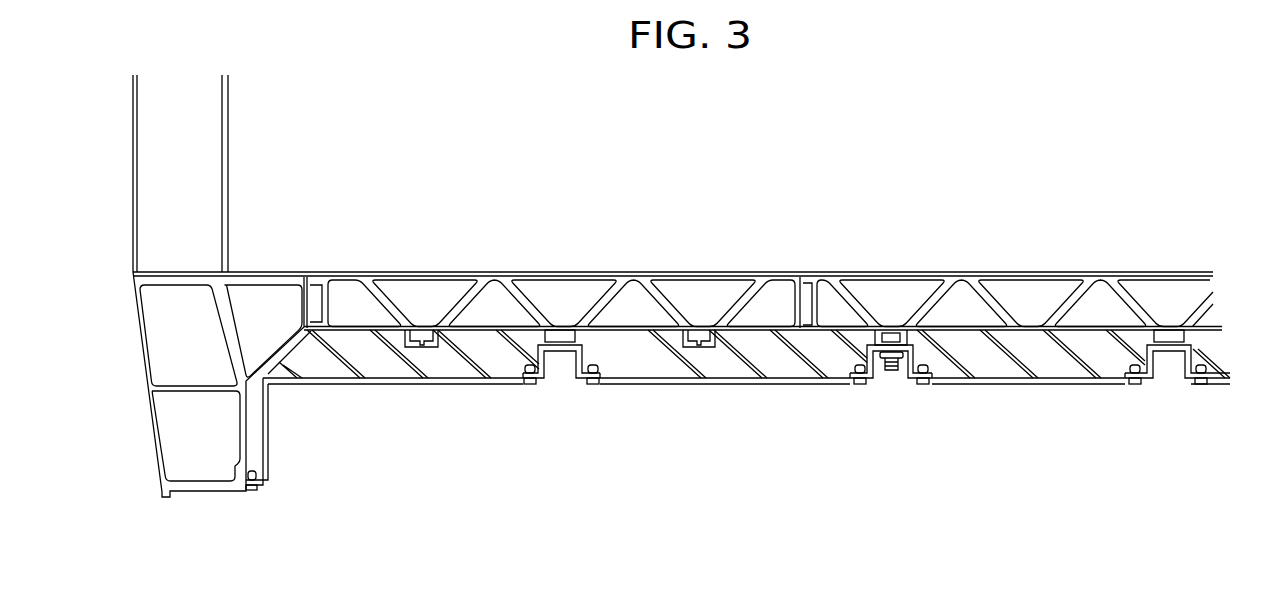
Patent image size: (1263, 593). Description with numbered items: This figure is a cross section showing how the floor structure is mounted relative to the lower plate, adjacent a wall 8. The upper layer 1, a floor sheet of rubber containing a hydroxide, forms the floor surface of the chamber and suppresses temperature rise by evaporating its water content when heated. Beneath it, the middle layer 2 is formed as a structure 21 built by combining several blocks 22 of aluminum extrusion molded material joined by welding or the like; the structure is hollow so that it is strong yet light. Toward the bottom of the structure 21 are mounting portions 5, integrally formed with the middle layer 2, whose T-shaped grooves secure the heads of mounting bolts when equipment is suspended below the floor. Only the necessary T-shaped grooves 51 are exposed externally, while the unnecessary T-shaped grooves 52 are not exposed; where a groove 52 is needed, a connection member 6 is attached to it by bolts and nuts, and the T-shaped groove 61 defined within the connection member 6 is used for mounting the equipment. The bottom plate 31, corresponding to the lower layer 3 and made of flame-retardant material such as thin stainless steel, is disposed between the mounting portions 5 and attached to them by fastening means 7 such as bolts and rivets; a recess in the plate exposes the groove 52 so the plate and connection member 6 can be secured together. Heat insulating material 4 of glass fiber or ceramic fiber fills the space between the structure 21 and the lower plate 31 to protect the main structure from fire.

The upper layer 1 is at (580, 270).
The middle layer 2 is at (1224, 301).
The lower layer 3 is at (333, 386).
The heat insulating material 4 is at (482, 363).
The mounting portion 5 is at (585, 391).
The connection member 6 is at (910, 389).
The fastening means 7 is at (253, 490).
The wall 8 is at (228, 130).
The structure 21 is at (438, 293).
The block 22 is at (225, 309).
The bottom plate 31 is at (442, 383).
The T-shaped groove 51 is at (563, 370).
The T-shaped groove 52 is at (423, 347).
The T-shaped groove 61 is at (890, 373).